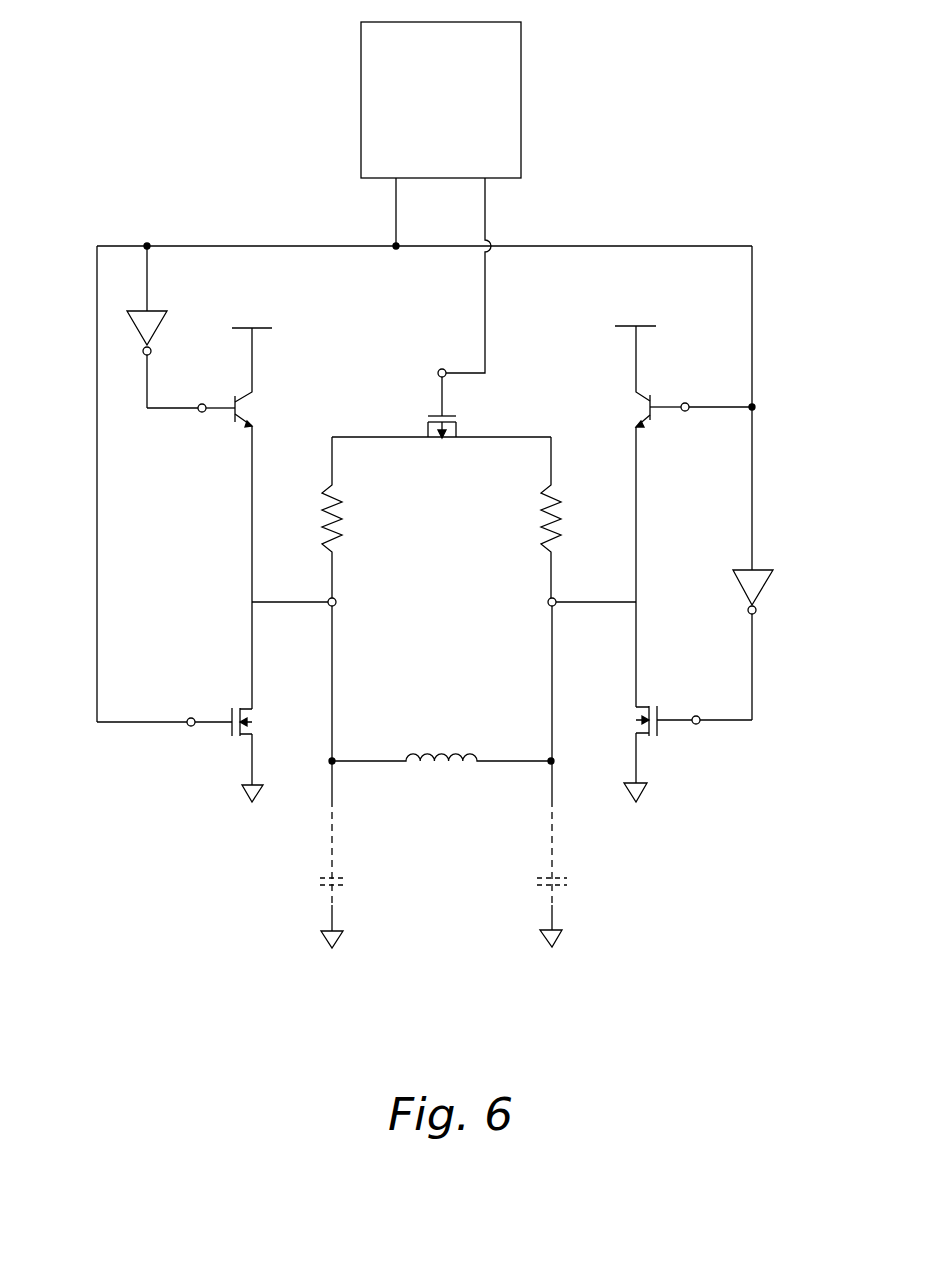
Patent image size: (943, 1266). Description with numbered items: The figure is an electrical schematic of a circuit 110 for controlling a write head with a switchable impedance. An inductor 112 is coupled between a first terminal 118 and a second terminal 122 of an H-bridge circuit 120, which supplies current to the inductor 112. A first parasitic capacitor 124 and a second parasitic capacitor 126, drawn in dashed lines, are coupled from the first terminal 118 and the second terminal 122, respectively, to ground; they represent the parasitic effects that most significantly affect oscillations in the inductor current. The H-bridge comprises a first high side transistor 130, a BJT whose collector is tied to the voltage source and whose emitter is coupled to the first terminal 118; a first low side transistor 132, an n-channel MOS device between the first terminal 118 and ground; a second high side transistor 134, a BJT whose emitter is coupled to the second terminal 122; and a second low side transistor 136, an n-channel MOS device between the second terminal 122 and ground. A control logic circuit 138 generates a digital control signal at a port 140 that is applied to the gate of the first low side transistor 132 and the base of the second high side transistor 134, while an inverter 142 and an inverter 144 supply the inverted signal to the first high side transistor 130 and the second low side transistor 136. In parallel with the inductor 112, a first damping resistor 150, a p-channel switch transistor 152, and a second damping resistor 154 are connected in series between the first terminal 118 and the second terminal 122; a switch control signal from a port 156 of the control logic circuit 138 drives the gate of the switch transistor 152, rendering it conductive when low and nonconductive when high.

The circuit 110 is at (174, 888).
The inductor 112 is at (443, 762).
The first terminal 118 is at (336, 604).
The H-bridge circuit 120 is at (409, 328).
The second terminal 122 is at (547, 602).
The first parasitic capacitor 124 is at (347, 878).
The second parasitic capacitor 126 is at (567, 878).
The first high side transistor 130 is at (254, 392).
The first low side transistor 132 is at (256, 707).
The second high side transistor 134 is at (636, 400).
The second low side transistor 136 is at (636, 710).
The control logic circuit 138 is at (521, 93).
The port 140 is at (393, 181).
The inverter 142 is at (158, 328).
The inverter 144 is at (766, 584).
The first damping resistor 150 is at (340, 521).
The switch transistor 152 is at (455, 438).
The second damping resistor 154 is at (540, 512).
The port 156 is at (487, 181).